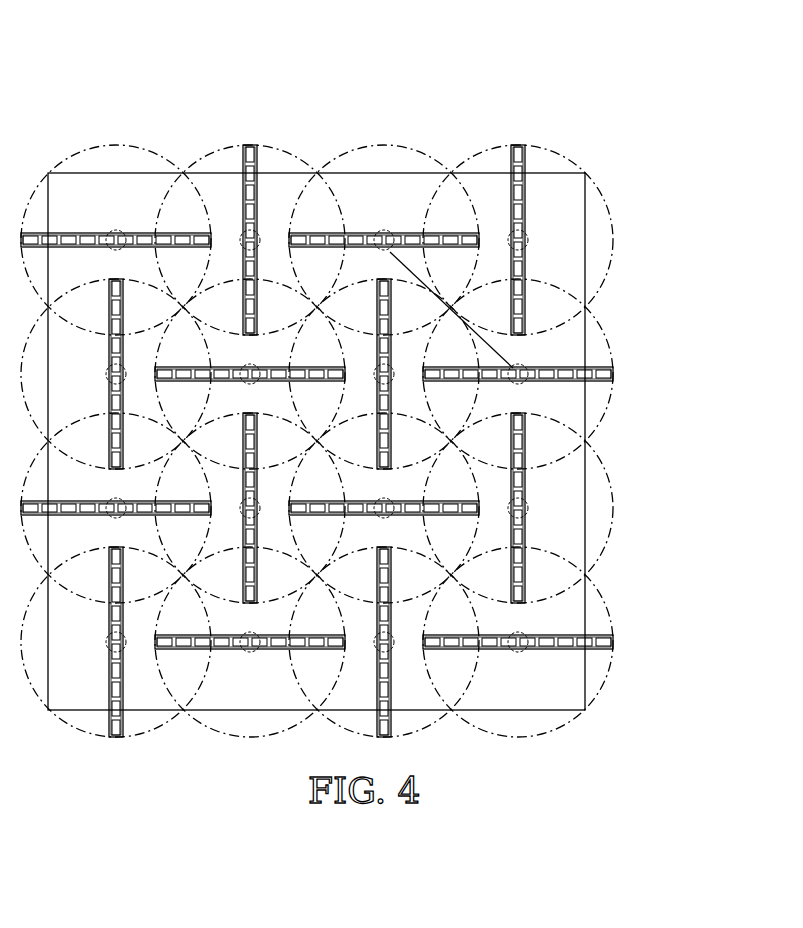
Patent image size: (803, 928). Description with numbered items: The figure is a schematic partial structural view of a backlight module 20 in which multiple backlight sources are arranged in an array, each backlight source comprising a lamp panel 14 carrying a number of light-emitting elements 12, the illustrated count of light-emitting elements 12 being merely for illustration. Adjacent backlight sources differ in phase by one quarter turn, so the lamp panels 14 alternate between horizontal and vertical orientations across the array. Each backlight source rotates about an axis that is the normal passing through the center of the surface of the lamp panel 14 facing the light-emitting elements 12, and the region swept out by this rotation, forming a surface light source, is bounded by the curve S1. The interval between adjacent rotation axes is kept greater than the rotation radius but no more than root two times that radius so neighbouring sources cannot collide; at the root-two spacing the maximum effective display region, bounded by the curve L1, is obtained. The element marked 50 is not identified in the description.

The backlight module 20 is at (326, 40).
The curve defining maximum effective display region L1 is at (587, 620).
The curve defining surface light source region S1 is at (607, 212).
The lamp panel 14 is at (525, 225).
The light-emitting element 12 is at (522, 248).
The center node 50 is at (530, 508).